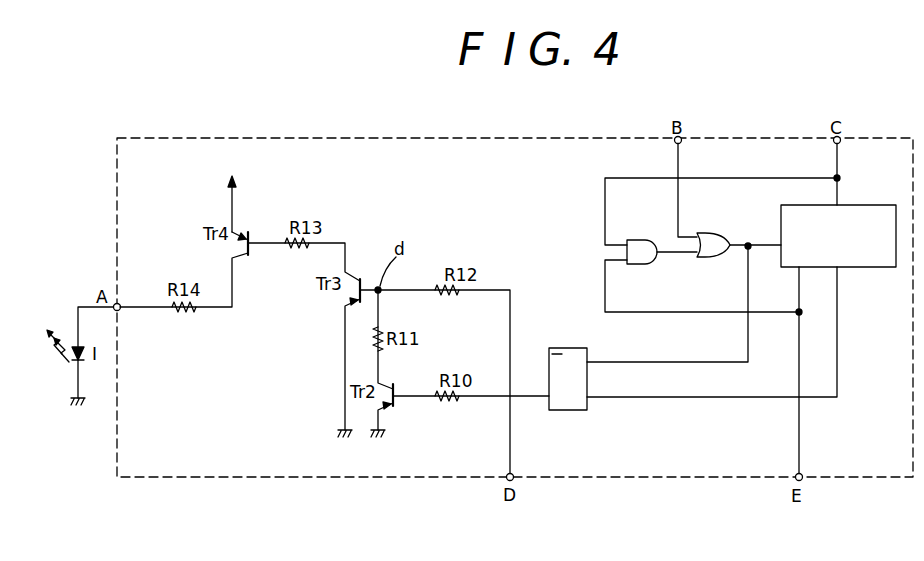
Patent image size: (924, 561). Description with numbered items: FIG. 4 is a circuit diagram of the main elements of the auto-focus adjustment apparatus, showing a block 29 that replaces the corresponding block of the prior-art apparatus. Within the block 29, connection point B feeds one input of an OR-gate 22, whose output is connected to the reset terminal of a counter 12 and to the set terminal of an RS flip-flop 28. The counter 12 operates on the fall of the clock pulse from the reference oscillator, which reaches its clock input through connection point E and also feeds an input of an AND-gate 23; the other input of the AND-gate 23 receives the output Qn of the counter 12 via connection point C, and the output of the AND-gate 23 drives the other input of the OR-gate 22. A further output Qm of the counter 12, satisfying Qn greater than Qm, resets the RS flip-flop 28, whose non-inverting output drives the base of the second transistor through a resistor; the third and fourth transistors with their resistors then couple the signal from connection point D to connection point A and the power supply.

The block 29 is at (439, 138).
The RS flip-flop 28 is at (560, 347).
The AND-gate 23 is at (638, 240).
The OR-gate 22 is at (708, 236).
The counter 12 is at (862, 205).